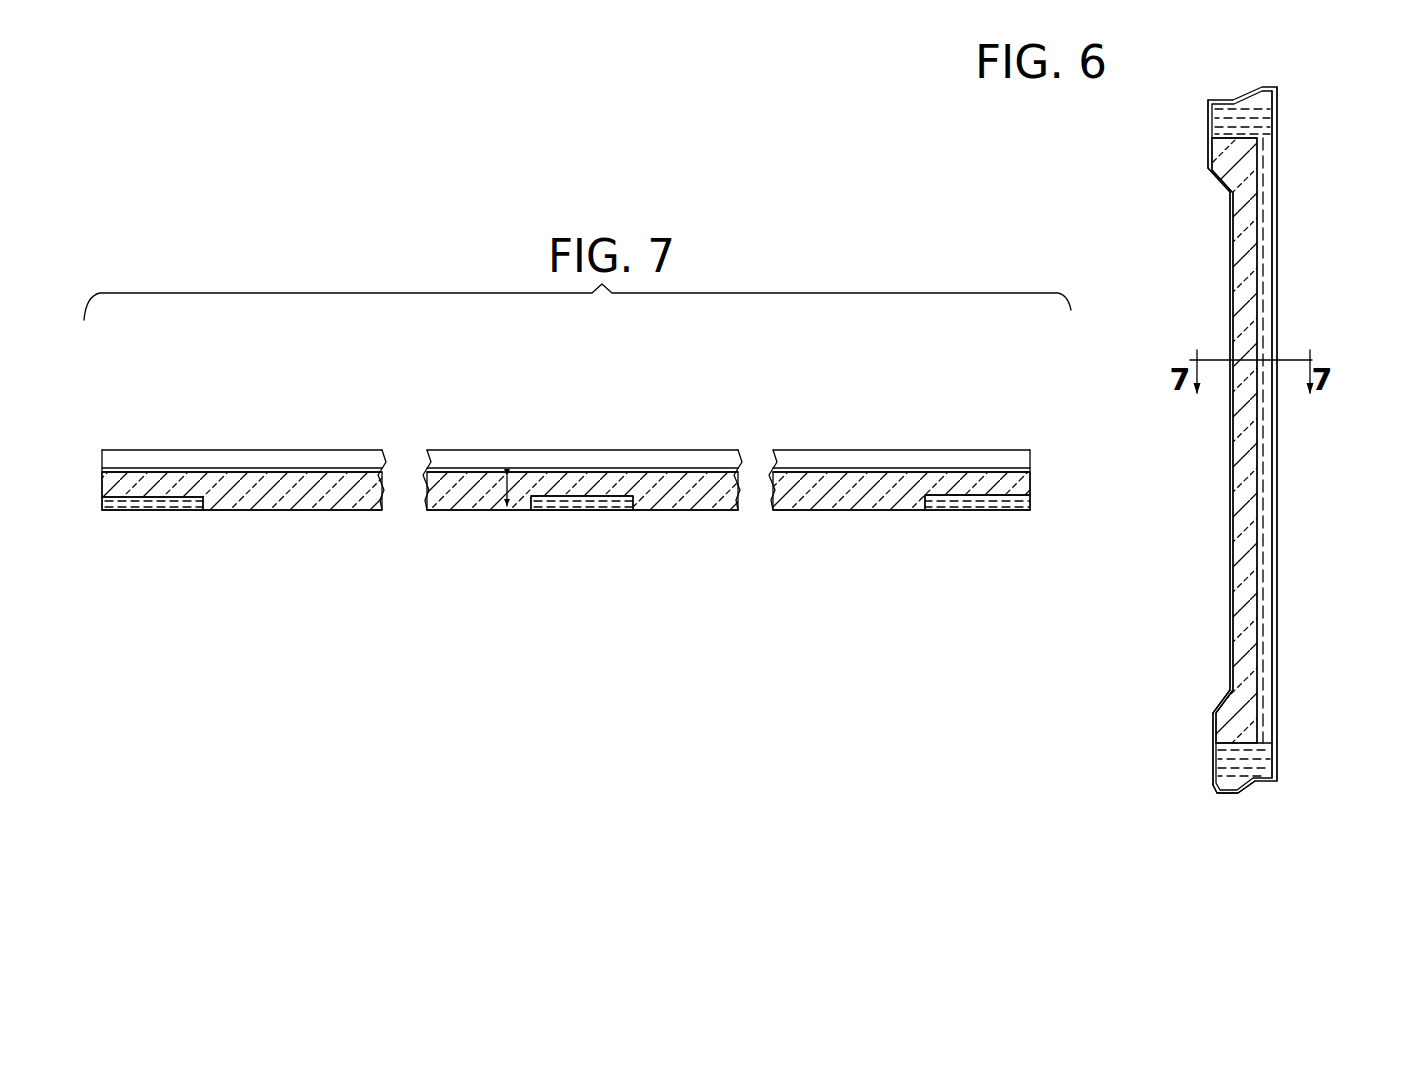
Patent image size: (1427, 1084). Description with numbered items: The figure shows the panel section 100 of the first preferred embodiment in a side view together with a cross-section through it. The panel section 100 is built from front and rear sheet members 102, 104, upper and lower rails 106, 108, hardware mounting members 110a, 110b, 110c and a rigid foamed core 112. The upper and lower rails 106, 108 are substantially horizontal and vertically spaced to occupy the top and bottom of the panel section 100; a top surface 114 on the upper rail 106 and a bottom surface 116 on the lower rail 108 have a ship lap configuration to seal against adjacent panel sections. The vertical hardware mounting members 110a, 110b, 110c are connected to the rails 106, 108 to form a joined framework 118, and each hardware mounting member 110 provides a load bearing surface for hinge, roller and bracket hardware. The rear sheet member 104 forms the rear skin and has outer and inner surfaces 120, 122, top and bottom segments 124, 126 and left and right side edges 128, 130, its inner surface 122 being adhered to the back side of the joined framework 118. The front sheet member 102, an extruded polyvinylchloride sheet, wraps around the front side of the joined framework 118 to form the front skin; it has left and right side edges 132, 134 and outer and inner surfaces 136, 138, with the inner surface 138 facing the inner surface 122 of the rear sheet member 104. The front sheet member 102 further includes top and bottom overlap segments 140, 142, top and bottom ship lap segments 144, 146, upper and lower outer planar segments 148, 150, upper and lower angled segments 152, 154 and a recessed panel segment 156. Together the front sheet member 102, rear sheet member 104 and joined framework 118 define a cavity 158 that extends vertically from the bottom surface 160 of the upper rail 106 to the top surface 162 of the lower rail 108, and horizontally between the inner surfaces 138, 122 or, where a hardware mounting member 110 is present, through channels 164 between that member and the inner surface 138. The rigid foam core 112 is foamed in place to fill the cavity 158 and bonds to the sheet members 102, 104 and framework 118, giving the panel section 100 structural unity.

In FIG. 6, the panel section 100 is at (1366, 162).
In FIG. 7, the panel section 100 is at (858, 372).
In FIG. 6, the front sheet member 102 is at (1230, 249).
In FIG. 7, the front sheet member 102 is at (928, 460).
In FIG. 6, the rear sheet member 104 is at (1279, 242).
In FIG. 7, the rear sheet member 104 is at (858, 512).
In FIG. 6, the upper rail 106 is at (1235, 99).
In FIG. 6, the lower rail 108 is at (1255, 783).
In FIG. 6, the hardware mounting member 110 is at (1270, 483).
In FIG. 7, the hardware mounting member 110a is at (973, 512).
In FIG. 7, the hardware mounting member 110b is at (553, 512).
In FIG. 7, the hardware mounting member 110c is at (163, 505).
In FIG. 6, the rigid foamed core 112 is at (1247, 462).
In FIG. 7, the rigid foamed core 112 is at (315, 500).
In FIG. 6, the top surface 114 is at (1232, 110).
In FIG. 6, the bottom surface 116 is at (1217, 788).
In FIG. 6, the joined framework 118 is at (1277, 743).
In FIG. 6, the outer surface 120 is at (1277, 562).
In FIG. 7, the outer surface 120 is at (653, 512).
In FIG. 6, the inner surface 122 is at (1272, 527).
In FIG. 7, the inner surface 122 is at (697, 503).
In FIG. 6, the top segment 124 is at (1278, 92).
In FIG. 6, the bottom segment 126 is at (1283, 772).
In FIG. 7, the left side edge 128 is at (1032, 510).
In FIG. 7, the right side edge 130 is at (102, 510).
In FIG. 7, the left side edge 132 is at (1032, 463).
In FIG. 7, the right side edge 134 is at (100, 453).
In FIG. 6, the outer surface 136 is at (1233, 443).
In FIG. 7, the outer surface 136 is at (213, 471).
In FIG. 6, the inner surface 138 is at (1235, 488).
In FIG. 7, the inner surface 138 is at (280, 479).
In FIG. 6, the top overlap segment 140 is at (1278, 103).
In FIG. 6, the bottom overlap segment 142 is at (1283, 779).
In FIG. 6, the top ship lap segment 144 is at (1248, 91).
In FIG. 6, the bottom ship lap segment 146 is at (1274, 783).
In FIG. 6, the upper outer planar segment 148 is at (1210, 145).
In FIG. 6, the lower outer planar segment 150 is at (1212, 743).
In FIG. 6, the upper angled segment 152 is at (1217, 182).
In FIG. 6, the lower angled segment 154 is at (1230, 690).
In FIG. 7, the lower angled segment 154 is at (680, 458).
In FIG. 6, the recessed panel segment 156 is at (1230, 312).
In FIG. 7, the cavity 158 is at (495, 484).
In FIG. 6, the bottom surface 160 is at (1240, 146).
In FIG. 6, the top surface 162 is at (1217, 715).
In FIG. 7, the channel 164 is at (548, 492).